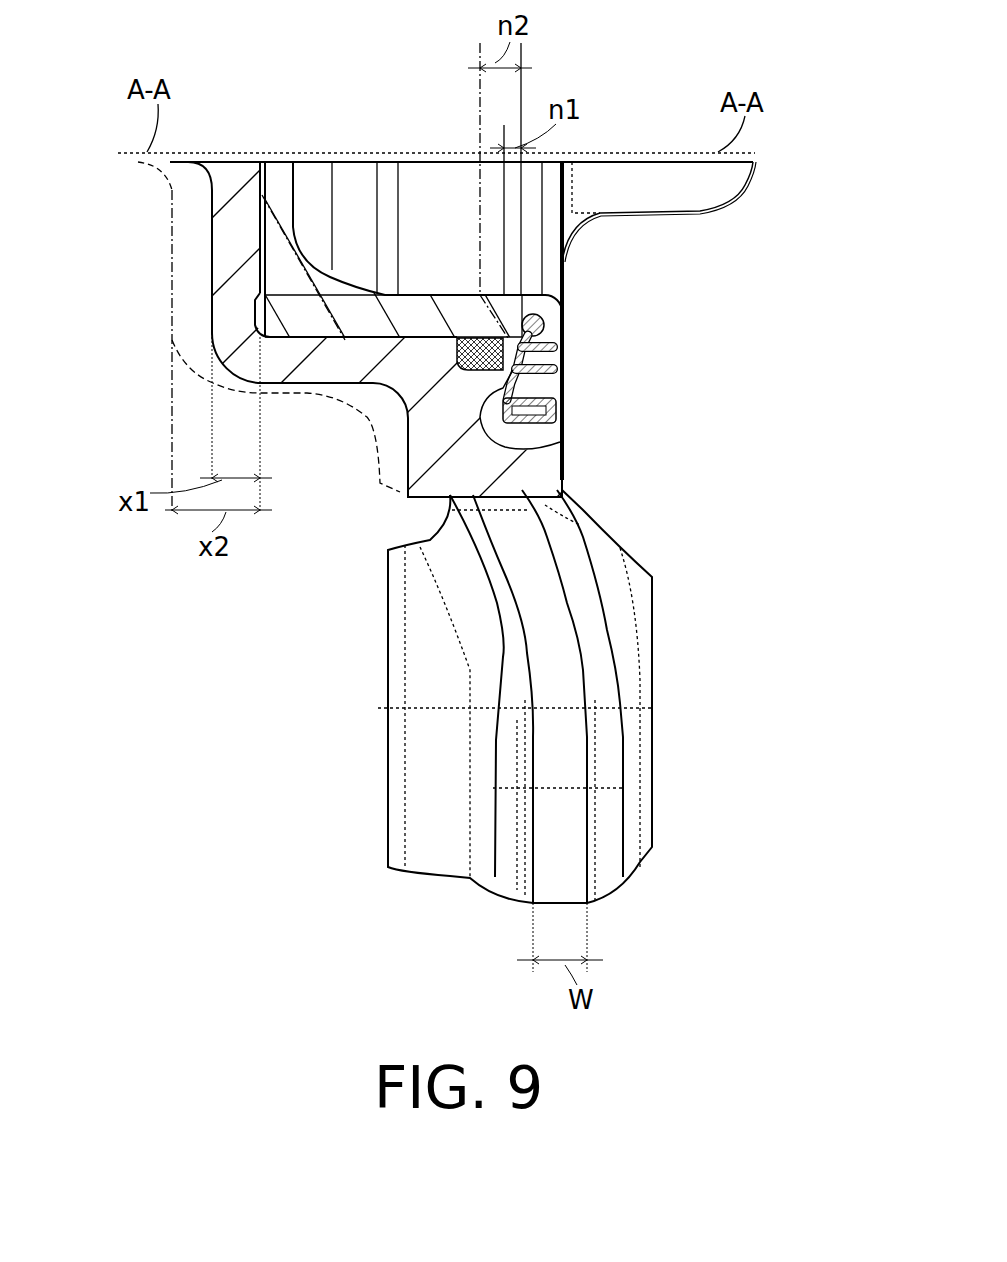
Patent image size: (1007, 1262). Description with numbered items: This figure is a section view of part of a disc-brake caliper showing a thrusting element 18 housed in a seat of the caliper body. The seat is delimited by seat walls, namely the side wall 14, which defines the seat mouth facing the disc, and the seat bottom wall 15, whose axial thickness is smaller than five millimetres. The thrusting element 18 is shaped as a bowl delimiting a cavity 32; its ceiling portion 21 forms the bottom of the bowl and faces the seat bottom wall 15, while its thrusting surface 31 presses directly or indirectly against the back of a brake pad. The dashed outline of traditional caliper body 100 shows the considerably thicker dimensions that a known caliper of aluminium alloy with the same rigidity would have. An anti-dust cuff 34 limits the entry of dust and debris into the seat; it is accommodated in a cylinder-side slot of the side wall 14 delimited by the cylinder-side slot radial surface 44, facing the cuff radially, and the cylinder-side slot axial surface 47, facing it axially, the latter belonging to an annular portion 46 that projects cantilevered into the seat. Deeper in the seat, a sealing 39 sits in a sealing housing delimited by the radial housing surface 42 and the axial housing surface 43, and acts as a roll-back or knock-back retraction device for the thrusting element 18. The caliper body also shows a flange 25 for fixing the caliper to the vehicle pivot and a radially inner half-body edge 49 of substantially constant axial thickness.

The outline of traditional caliper body 100 is at (168, 192).
The side wall 14 is at (310, 357).
The seat bottom wall 15 is at (240, 200).
The thrusting element 18 is at (279, 172).
The ceiling portion 21 is at (279, 172).
The cavity 32 is at (460, 229).
The sealing 39 is at (447, 478).
The thrusting surface 31 is at (598, 350).
The axial housing surface 43 is at (543, 322).
The annular portion 46 is at (562, 357).
The cylinder-side slot axial surface 47 is at (562, 385).
The cylinder-side slot radial surface 44 is at (560, 433).
The anti-dust cuff 34 is at (563, 363).
The radial housing surface 42 is at (562, 450).
The flange 25 is at (450, 837).
The radially inner half-body edge 49 is at (565, 865).